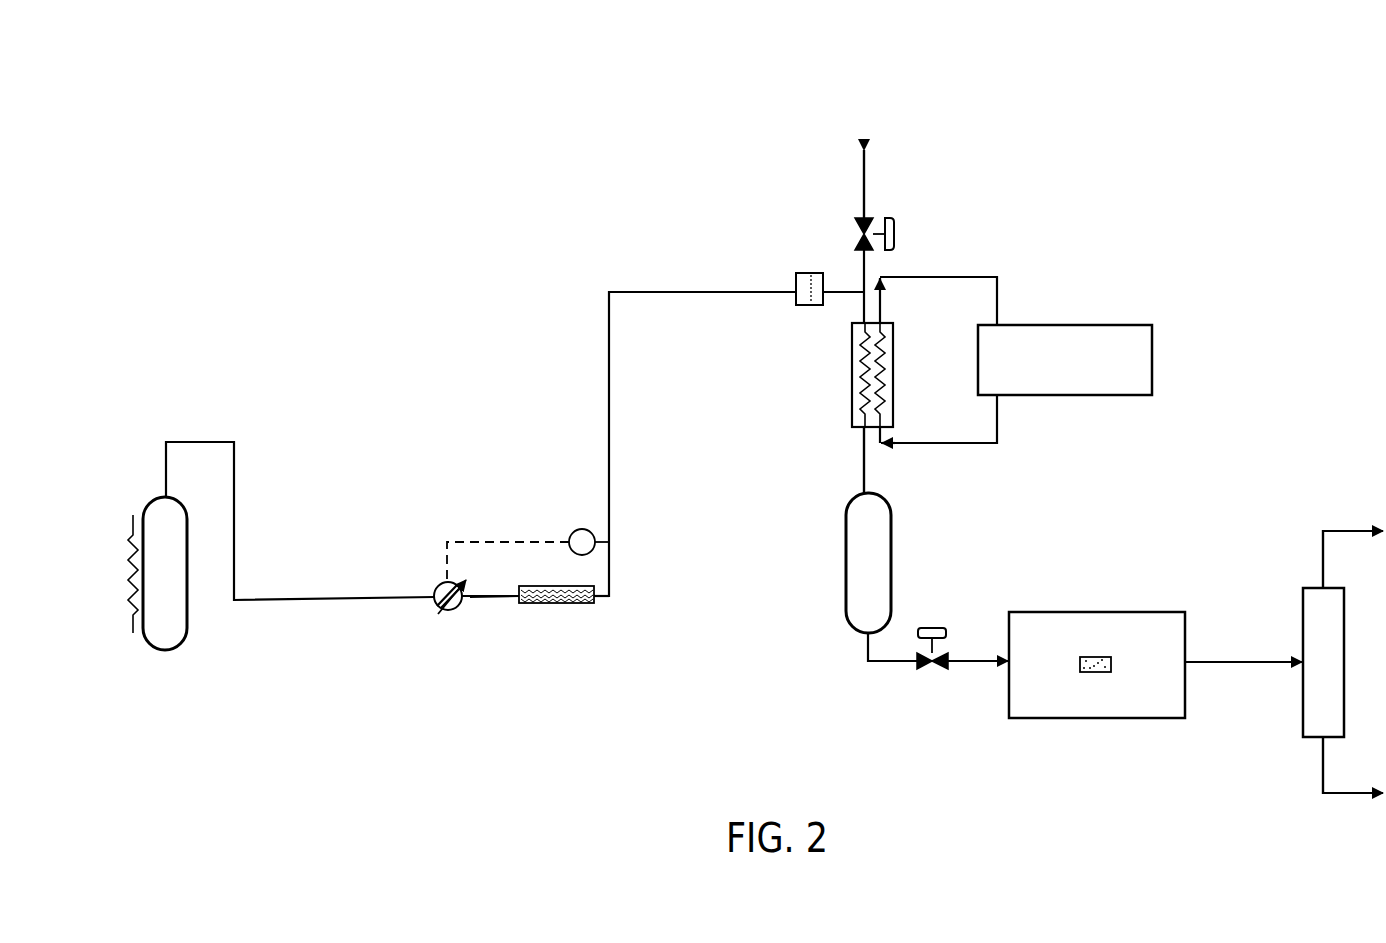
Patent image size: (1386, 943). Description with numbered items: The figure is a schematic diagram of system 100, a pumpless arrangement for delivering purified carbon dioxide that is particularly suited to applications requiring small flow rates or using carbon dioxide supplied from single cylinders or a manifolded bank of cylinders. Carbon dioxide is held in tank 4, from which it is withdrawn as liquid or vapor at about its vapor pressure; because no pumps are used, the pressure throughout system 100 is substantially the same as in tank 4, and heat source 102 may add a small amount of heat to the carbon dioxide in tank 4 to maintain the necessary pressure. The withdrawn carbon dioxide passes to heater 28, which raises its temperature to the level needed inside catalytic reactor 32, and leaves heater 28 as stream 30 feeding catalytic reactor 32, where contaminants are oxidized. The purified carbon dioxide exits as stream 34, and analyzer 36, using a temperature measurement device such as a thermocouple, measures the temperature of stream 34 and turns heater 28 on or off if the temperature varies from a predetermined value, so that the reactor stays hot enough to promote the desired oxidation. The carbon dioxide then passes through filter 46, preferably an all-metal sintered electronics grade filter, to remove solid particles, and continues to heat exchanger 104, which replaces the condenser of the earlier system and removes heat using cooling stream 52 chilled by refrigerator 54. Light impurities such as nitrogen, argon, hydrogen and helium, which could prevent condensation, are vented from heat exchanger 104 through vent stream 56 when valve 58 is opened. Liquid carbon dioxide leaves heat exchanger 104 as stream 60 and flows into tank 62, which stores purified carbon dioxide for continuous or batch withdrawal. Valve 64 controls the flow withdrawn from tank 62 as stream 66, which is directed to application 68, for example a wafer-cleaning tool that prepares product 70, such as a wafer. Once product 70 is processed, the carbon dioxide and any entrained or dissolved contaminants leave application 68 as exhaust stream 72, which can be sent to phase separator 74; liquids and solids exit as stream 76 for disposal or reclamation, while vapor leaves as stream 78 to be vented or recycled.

The tank 4 is at (165, 573).
The heater 28 is at (448, 612).
The stream 30 is at (496, 598).
The catalytic reactor 32 is at (560, 604).
The stream 34 is at (607, 604).
The analyzer 36 is at (569, 530).
The filter 46 is at (796, 283).
The cooling stream 52 is at (965, 444).
The refrigerator 54 is at (1016, 336).
The vent stream 56 is at (863, 188).
The valve 58 is at (894, 234).
The stream 60 is at (864, 461).
The tank 62 is at (868, 563).
The valve 64 is at (932, 668).
The stream 66 is at (975, 658).
The application 68 is at (1127, 718).
The product 70 is at (1111, 660).
The exhaust stream 72 is at (1240, 660).
The phase separator 74 is at (1323, 662).
The stream 76 is at (1350, 795).
The stream 78 is at (1350, 530).
The system 100 is at (1198, 168).
The heat source 102 is at (133, 617).
The heat exchanger 104 is at (852, 378).